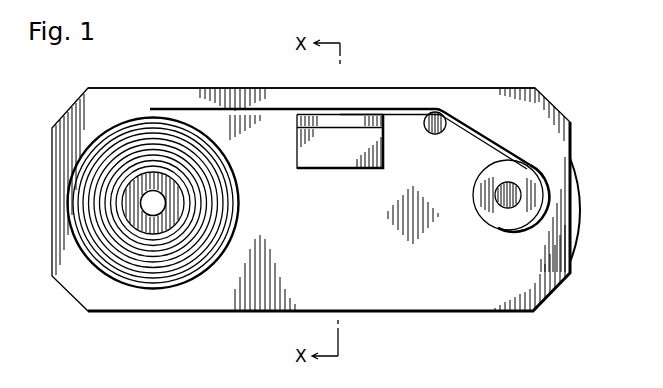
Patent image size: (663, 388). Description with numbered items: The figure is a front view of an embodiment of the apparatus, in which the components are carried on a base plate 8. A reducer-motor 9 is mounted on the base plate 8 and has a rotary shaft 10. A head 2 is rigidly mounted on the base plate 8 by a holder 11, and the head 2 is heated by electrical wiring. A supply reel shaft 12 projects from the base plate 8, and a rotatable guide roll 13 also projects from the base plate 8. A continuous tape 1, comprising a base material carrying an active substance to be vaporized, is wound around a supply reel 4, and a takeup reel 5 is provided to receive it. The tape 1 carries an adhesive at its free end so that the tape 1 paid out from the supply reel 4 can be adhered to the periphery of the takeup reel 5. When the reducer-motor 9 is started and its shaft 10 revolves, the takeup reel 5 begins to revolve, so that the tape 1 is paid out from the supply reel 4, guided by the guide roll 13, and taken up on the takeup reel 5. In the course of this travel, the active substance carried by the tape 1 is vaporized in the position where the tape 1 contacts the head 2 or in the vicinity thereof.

The continuous tape 1 is at (192, 108).
The head 2 is at (363, 114).
The supply reel 4 is at (133, 202).
The takeup reel 5 is at (522, 215).
The base plate 8 is at (453, 300).
The reducer-motor 9 is at (582, 197).
The rotary shaft 10 is at (517, 188).
The holder 11 is at (303, 145).
The supply reel shaft 12 is at (148, 210).
The rotatable guide roll 13 is at (443, 109).